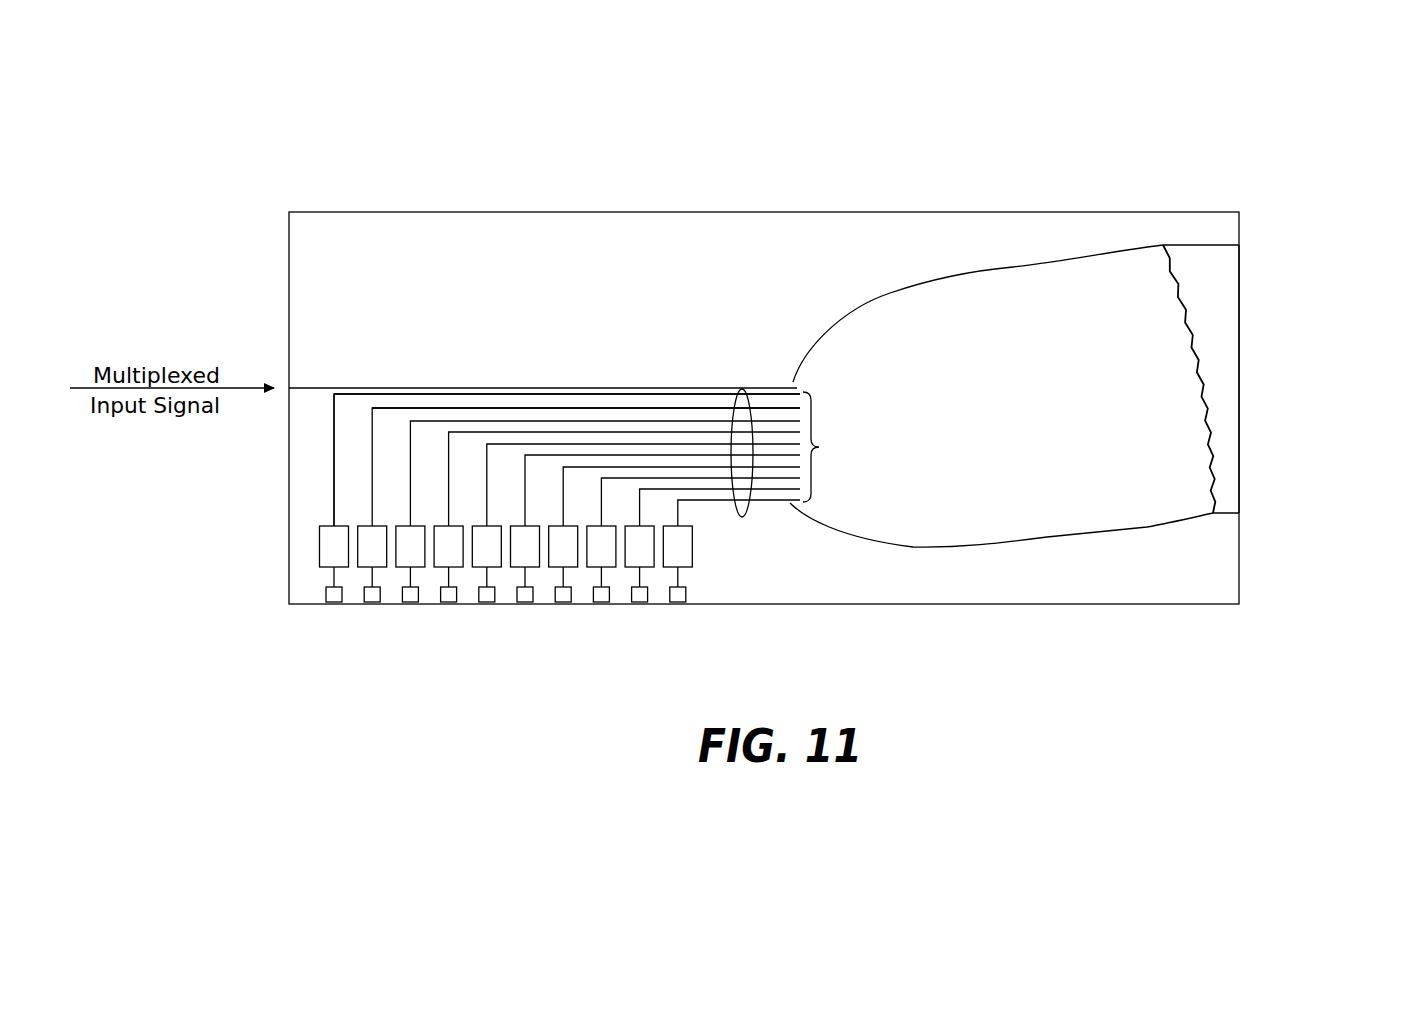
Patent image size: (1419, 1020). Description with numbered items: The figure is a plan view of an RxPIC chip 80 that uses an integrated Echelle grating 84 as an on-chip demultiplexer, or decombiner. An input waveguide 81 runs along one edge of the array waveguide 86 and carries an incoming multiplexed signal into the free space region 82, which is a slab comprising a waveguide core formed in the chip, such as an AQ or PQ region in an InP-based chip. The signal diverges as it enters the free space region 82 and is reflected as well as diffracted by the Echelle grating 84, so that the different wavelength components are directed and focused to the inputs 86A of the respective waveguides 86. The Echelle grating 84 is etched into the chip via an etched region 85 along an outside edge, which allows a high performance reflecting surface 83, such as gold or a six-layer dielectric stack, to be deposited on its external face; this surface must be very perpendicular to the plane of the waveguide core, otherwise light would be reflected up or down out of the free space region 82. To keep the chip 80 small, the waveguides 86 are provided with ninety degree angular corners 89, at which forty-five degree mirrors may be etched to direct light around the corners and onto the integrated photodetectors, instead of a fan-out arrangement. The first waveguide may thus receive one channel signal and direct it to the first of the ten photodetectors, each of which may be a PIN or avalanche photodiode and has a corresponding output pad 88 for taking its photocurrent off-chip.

The RxPIC chip 80 is at (764, 408).
The input waveguide 81 is at (510, 388).
The free space region 82 is at (1014, 396).
The reflecting surface 83 is at (1193, 300).
The Echelle grating 84 is at (1213, 432).
The etched region 85 is at (1215, 348).
The array waveguide 86 is at (747, 512).
The waveguide inputs 86A is at (832, 447).
The output pad 88 is at (332, 598).
The angular corners 89 is at (372, 408).